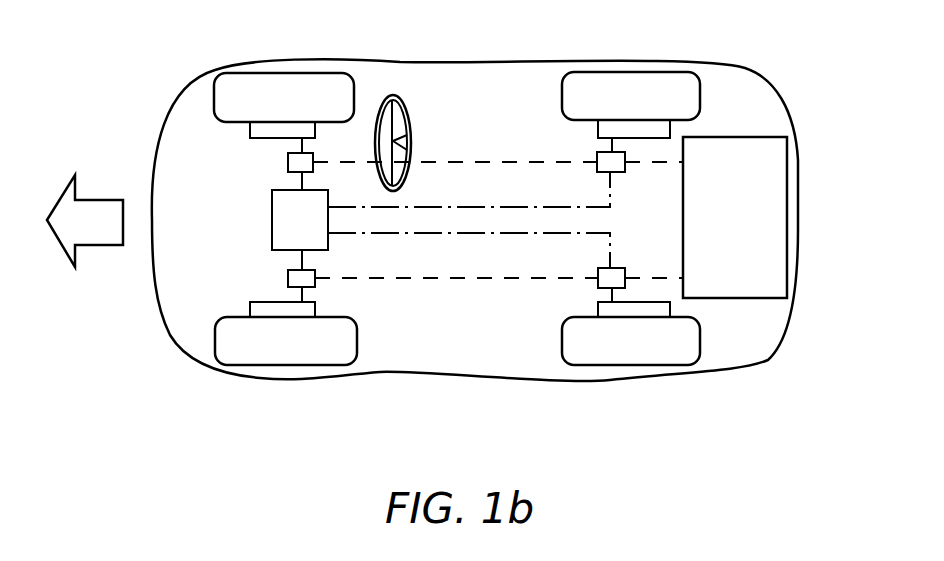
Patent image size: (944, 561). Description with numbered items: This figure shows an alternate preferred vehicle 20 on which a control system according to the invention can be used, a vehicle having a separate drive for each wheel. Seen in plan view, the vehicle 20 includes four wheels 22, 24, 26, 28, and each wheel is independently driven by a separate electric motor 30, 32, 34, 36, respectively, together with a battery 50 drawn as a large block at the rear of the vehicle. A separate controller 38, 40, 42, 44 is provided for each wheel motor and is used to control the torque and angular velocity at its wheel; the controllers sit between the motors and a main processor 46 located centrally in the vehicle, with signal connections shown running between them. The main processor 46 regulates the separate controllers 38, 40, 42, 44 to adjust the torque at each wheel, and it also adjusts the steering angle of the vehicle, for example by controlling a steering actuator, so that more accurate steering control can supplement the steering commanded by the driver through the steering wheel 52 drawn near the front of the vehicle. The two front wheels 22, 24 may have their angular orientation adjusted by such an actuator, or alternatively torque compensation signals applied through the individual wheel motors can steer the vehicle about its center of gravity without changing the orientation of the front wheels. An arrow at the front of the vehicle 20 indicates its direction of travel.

The vehicle 20 is at (788, 98).
The wheel 22 is at (290, 73).
The wheel 24 is at (283, 367).
The wheel 26 is at (640, 72).
The wheel 28 is at (632, 367).
The electric motor 30 is at (252, 130).
The electric motor 32 is at (250, 305).
The electric motor 34 is at (598, 128).
The electric motor 36 is at (598, 305).
The controller 38 is at (288, 162).
The controller 40 is at (288, 278).
The controller 42 is at (621, 173).
The controller 44 is at (622, 268).
The main processor 46 is at (272, 222).
The battery 50 is at (787, 218).
The steering wheel 52 is at (413, 140).